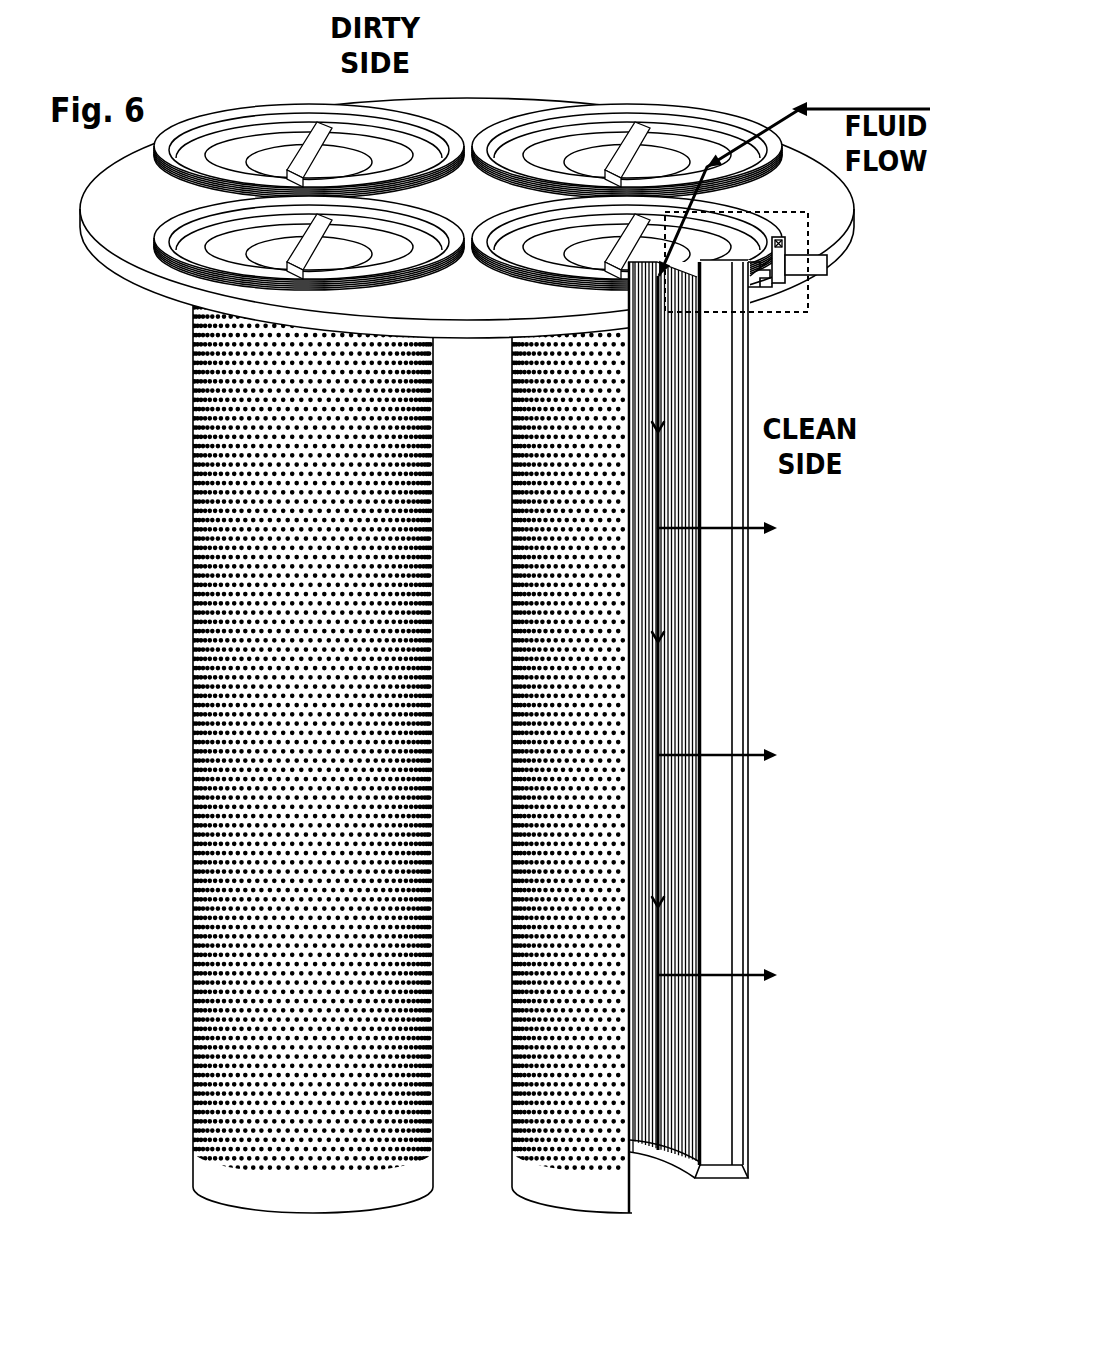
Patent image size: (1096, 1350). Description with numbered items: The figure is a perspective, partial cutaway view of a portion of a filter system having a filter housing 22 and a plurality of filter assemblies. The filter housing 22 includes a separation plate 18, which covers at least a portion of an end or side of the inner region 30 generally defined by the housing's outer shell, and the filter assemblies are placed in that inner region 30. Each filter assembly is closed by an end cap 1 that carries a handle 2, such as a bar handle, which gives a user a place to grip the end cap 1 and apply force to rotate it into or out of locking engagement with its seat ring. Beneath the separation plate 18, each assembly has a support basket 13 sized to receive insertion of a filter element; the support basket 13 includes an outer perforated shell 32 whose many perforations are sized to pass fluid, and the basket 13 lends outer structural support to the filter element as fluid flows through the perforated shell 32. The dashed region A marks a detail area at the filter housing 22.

The end cap 1 is at (252, 118).
The handle 2 is at (653, 140).
The support basket 13 is at (205, 371).
The separation plate 18 is at (100, 212).
The filter housing 22 is at (829, 298).
The inner region 30 is at (155, 650).
The outer perforated shell 32 is at (233, 935).
The detail area A is at (786, 316).